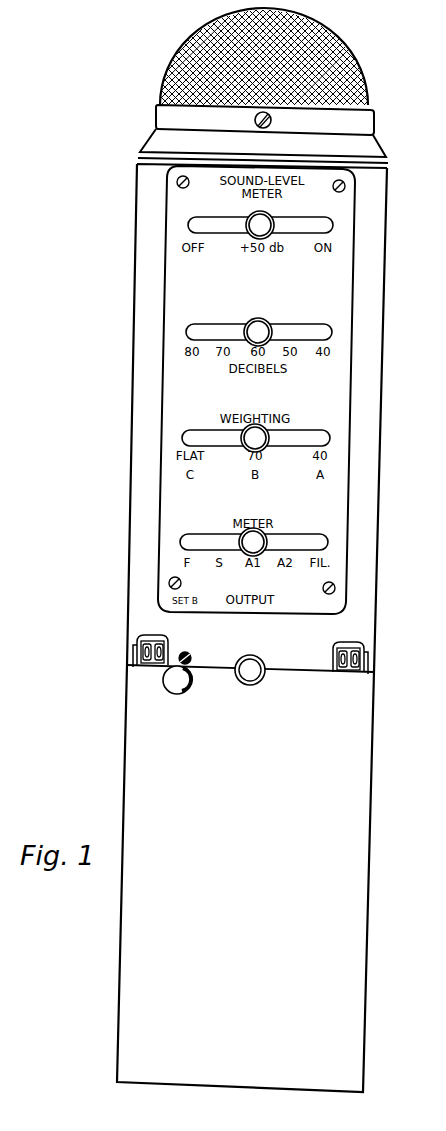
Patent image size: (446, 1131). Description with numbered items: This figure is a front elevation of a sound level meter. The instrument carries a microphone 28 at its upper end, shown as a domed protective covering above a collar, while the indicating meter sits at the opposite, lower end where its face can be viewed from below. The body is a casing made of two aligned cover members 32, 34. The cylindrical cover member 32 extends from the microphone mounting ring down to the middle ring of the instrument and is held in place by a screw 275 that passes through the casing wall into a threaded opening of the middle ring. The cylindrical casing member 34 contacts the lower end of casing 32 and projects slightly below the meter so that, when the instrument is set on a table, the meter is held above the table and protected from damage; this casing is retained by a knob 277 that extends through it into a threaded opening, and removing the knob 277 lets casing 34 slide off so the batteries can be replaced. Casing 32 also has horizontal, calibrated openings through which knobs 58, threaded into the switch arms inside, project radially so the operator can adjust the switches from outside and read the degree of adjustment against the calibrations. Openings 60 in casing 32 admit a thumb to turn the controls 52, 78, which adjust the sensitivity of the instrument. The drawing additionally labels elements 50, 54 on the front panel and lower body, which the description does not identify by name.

The microphone 28 is at (348, 61).
The cylindrical cover member 32 is at (381, 453).
The cylindrical casing member 34 is at (372, 823).
The control slot 50 is at (313, 221).
The knob 58 is at (247, 222).
The opening 60 is at (148, 633).
The control 52 is at (147, 652).
The control 78 is at (357, 658).
The screw 275 is at (185, 652).
The knob 277 is at (165, 683).
The output connector 54 is at (267, 675).